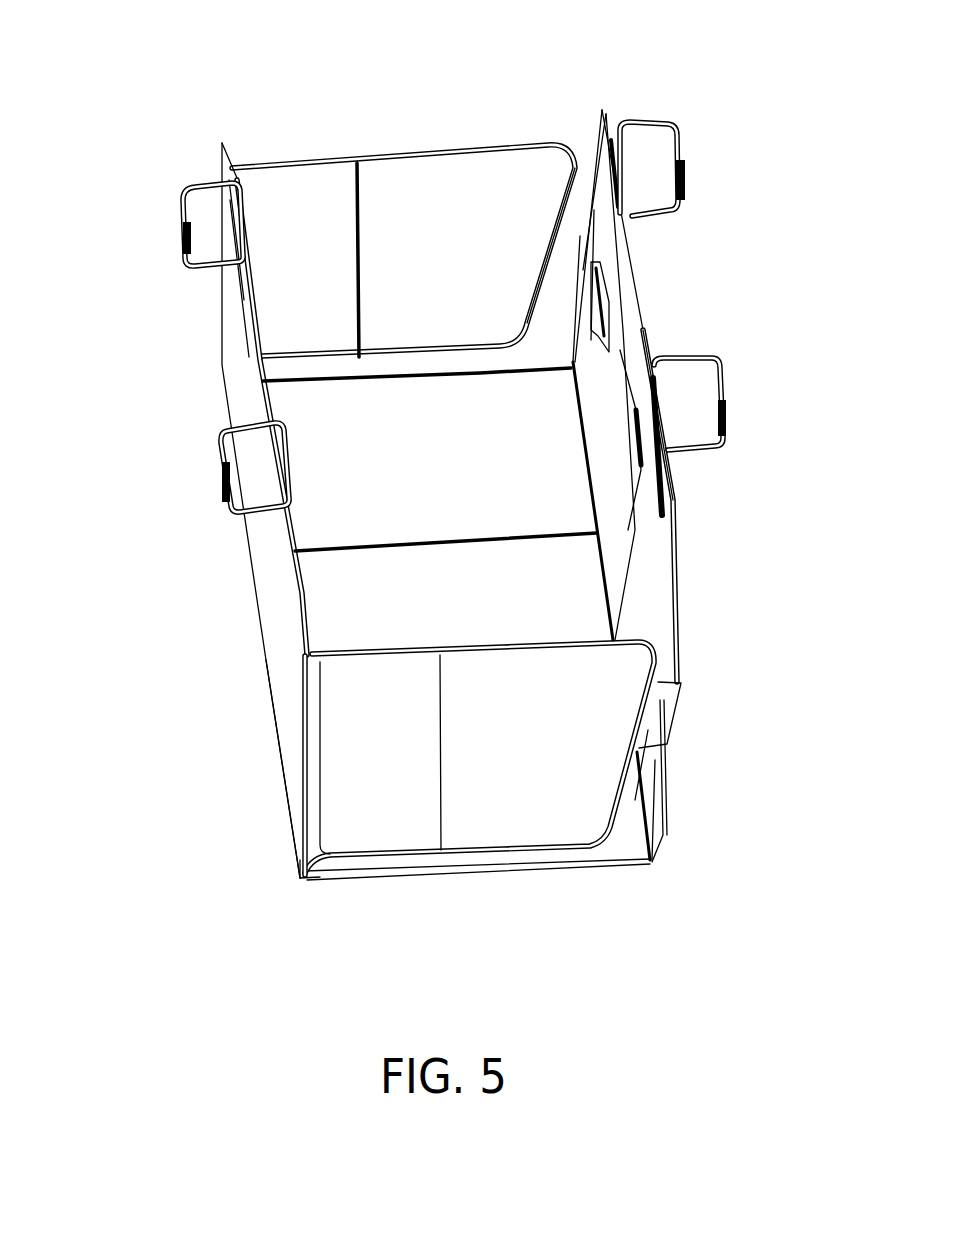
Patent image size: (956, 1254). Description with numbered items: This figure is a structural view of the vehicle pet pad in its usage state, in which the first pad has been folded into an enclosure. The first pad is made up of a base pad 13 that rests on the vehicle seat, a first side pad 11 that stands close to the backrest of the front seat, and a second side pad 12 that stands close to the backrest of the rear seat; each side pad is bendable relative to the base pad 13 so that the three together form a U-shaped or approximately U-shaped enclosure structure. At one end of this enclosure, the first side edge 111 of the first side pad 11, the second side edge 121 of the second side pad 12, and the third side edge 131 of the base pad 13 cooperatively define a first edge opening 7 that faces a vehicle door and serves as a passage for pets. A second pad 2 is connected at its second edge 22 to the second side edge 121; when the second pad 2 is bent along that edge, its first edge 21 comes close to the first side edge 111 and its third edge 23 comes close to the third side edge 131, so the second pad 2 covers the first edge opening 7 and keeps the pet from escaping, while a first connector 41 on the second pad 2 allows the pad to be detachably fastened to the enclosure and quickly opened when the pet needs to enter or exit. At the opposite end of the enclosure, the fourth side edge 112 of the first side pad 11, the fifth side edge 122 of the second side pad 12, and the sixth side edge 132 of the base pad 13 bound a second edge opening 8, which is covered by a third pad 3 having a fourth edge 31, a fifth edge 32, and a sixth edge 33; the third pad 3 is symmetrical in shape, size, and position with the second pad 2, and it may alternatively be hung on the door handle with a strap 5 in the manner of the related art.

The second pad 2 is at (498, 795).
The third pad 3 is at (415, 255).
The strap 5 is at (195, 193).
The first edge opening 7 is at (622, 808).
The second edge opening 8 is at (560, 280).
The first side pad 11 is at (640, 546).
The second side pad 12 is at (283, 592).
The base pad 13 is at (428, 515).
The first edge 21 is at (634, 772).
The second edge 22 is at (320, 878).
The third edge 23 is at (450, 848).
The fourth edge 31 is at (538, 297).
The fifth edge 32 is at (251, 232).
The sixth edge 33 is at (338, 335).
The first connector 41 is at (655, 705).
The first side edge 111 is at (680, 657).
The fourth side edge 112 is at (588, 338).
The second side edge 121 is at (318, 775).
The fifth side edge 122 is at (232, 318).
The third side edge 131 is at (588, 868).
The sixth side edge 132 is at (332, 377).